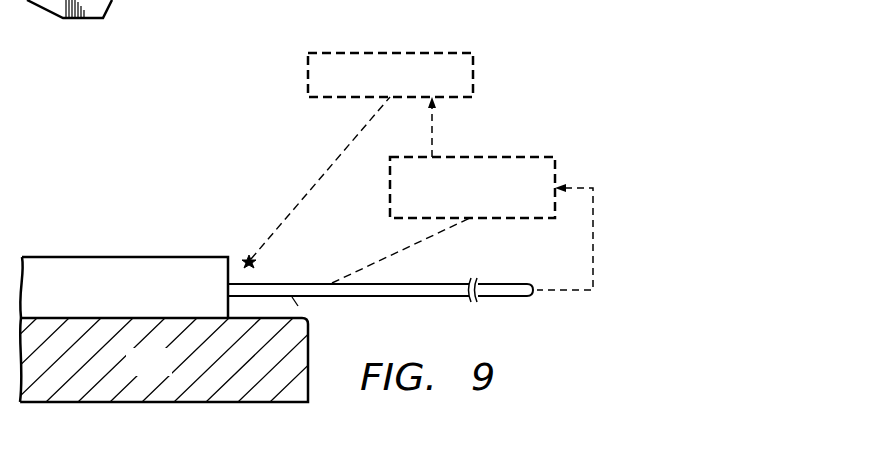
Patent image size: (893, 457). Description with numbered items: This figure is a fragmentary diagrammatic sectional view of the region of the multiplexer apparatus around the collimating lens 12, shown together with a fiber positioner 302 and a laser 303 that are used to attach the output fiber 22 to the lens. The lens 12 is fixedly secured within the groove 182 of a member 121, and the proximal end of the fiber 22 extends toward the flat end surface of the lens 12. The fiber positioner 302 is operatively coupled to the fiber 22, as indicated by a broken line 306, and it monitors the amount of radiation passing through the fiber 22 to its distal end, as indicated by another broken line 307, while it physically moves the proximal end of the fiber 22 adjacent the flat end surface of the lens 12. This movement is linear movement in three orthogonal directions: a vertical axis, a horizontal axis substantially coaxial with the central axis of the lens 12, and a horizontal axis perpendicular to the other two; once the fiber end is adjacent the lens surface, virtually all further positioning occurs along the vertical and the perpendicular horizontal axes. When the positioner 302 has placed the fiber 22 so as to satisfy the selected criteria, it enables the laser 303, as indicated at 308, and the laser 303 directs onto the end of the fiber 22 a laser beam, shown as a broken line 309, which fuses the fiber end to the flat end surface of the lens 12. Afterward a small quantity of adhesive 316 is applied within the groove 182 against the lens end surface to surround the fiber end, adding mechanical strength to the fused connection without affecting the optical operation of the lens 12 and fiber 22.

The collimating lens 12 is at (119, 260).
The member 121 is at (169, 375).
The output fiber 22 is at (430, 298).
The groove 182 is at (297, 314).
The adhesive 316 is at (257, 269).
The laser 303 is at (391, 53).
The fiber positioner 302 is at (527, 157).
The enabling indication 308 is at (433, 138).
The broken line (radiation monitoring) 307 is at (595, 245).
The laser beam 309 is at (326, 170).
The broken line (operative coupling) 306 is at (382, 262).